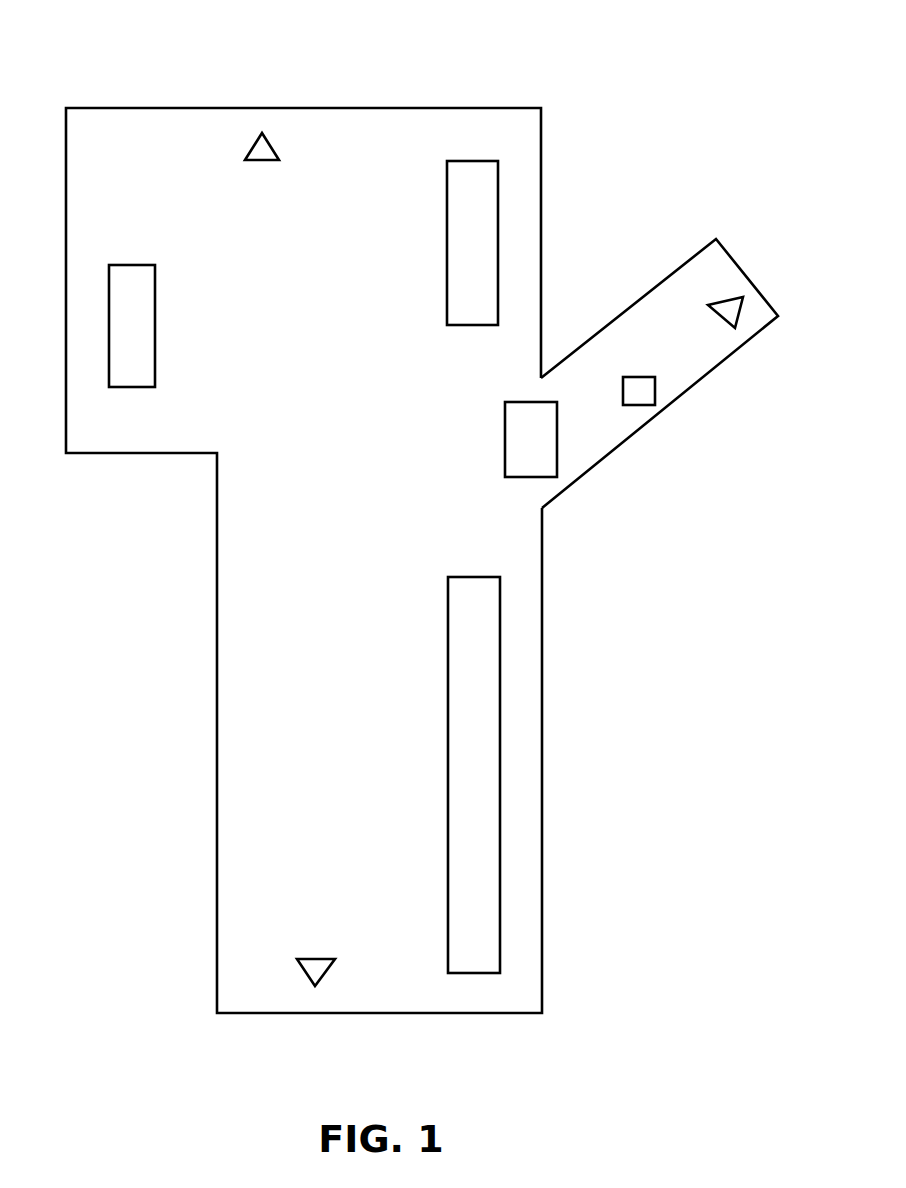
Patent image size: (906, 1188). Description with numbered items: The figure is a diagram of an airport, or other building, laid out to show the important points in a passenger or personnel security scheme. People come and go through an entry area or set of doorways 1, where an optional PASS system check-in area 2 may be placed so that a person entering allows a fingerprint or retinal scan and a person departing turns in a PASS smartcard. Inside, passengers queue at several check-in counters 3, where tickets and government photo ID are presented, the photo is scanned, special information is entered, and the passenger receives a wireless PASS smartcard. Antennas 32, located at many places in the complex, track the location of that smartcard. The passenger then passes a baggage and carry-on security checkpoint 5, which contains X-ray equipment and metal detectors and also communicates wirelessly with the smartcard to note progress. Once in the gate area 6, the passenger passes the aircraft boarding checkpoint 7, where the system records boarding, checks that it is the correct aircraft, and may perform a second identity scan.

The entry area or set of doorways 1 is at (148, 148).
The PASS system check-in area 2 is at (125, 363).
The check-in counters 3 is at (485, 212).
The baggage and carry-on security checkpoint 5 is at (520, 443).
The gate area 6 is at (643, 345).
The aircraft boarding checkpoint 7 is at (647, 395).
The antennas 32 is at (273, 133).